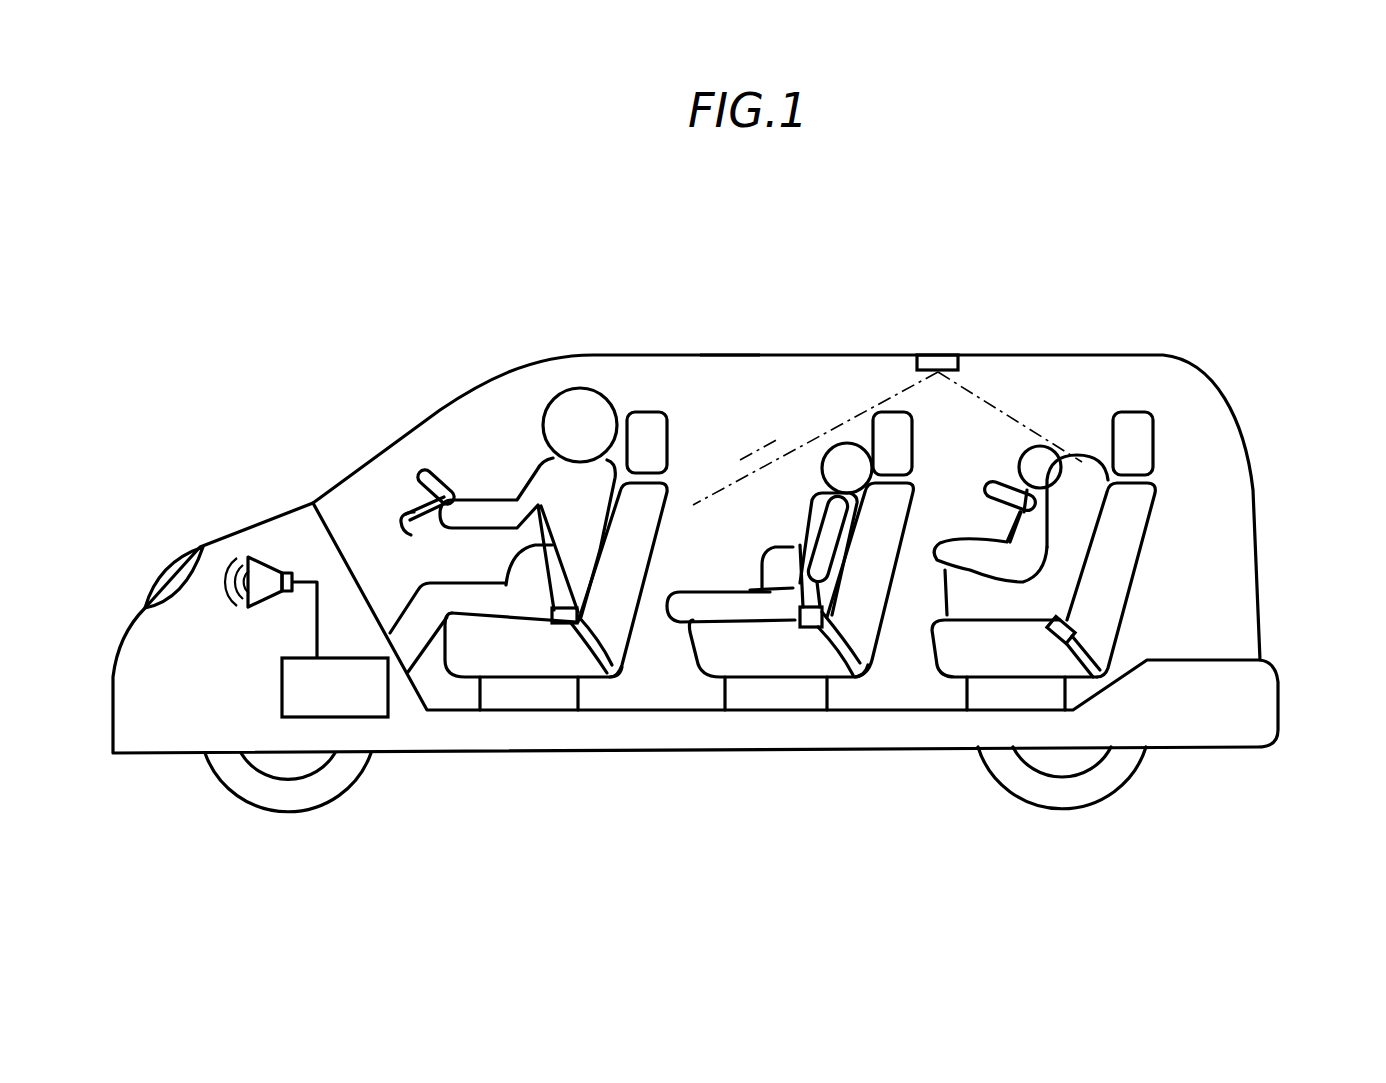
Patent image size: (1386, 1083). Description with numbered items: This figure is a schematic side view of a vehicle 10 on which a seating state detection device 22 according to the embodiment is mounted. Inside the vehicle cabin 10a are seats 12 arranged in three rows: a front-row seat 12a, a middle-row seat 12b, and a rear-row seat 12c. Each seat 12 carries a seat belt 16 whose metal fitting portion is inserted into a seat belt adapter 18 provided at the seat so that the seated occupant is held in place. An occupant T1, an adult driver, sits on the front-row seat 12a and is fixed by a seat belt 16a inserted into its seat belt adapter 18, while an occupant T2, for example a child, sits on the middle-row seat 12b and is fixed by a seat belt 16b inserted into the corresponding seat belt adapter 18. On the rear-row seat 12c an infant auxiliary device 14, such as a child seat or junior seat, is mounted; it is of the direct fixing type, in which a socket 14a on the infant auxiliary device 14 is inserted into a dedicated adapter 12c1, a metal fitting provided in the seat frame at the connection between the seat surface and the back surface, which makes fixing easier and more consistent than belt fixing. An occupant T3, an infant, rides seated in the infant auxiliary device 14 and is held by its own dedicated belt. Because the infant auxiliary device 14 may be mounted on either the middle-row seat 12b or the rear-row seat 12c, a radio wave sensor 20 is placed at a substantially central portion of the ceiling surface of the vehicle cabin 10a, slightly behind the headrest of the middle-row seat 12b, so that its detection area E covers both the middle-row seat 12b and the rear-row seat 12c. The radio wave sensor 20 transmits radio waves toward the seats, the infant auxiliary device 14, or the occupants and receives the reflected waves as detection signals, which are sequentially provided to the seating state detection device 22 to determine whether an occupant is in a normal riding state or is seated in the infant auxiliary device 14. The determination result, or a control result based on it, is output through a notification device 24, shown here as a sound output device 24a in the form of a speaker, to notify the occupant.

The vehicle 10 is at (703, 345).
The vehicle cabin 10a is at (753, 377).
The seats 12 is at (890, 384).
The front-row seat 12a is at (647, 437).
The middle-row seat 12b is at (888, 435).
The rear-row seat 12c is at (1132, 435).
The adapter 12c1 is at (1080, 626).
The infant auxiliary device 14 is at (1146, 659).
The socket 14a is at (1043, 630).
The seat belt 16 is at (679, 662).
The seat belt 16a is at (537, 547).
The seat belt 16b is at (797, 548).
The seat belt adapter 18 is at (567, 623).
The radio wave sensor 20 is at (938, 362).
The seating state detection device 22 is at (368, 698).
The notification device 24 is at (267, 558).
The sound output device 24a is at (263, 573).
The occupant T1 is at (585, 402).
The occupant T2 is at (847, 460).
The occupant T3 is at (1040, 460).
The detection area E is at (753, 470).